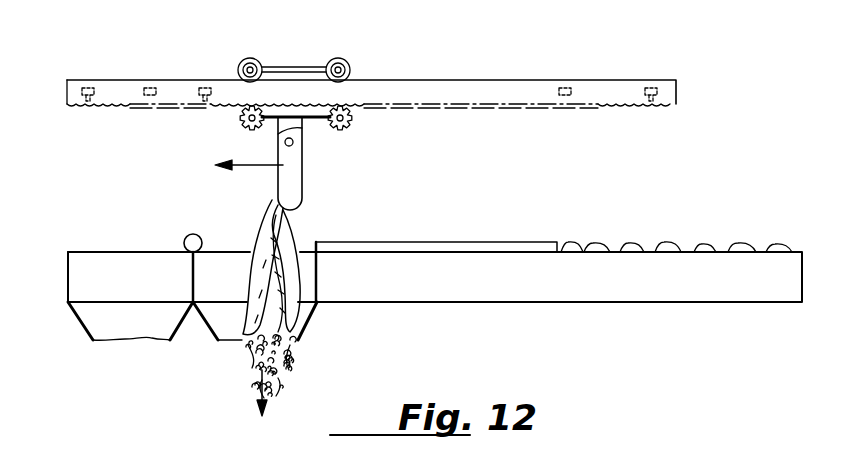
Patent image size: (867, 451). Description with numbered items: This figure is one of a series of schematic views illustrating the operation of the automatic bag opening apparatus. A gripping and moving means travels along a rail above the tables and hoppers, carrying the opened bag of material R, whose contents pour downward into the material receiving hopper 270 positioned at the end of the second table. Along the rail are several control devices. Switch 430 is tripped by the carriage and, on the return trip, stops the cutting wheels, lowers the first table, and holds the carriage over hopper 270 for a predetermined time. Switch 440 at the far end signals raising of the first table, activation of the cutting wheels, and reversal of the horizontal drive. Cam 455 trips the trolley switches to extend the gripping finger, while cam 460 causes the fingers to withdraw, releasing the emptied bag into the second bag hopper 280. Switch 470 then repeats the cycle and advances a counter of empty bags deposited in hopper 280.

The switch 470 is at (88, 78).
The cam 460 is at (156, 78).
The switch 430 is at (212, 78).
The cam 455 is at (566, 80).
The switch 440 is at (656, 78).
The material receiving hopper 270 is at (300, 340).
The second bag hopper 280 is at (83, 328).
The bag of material R is at (270, 208).